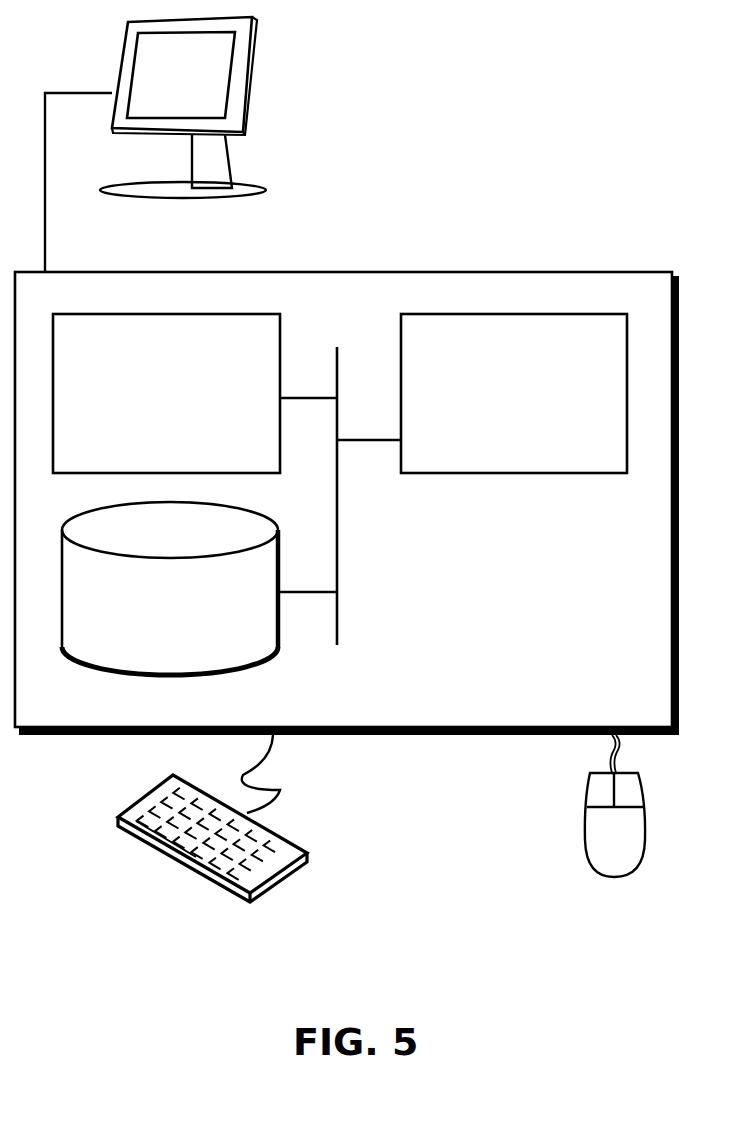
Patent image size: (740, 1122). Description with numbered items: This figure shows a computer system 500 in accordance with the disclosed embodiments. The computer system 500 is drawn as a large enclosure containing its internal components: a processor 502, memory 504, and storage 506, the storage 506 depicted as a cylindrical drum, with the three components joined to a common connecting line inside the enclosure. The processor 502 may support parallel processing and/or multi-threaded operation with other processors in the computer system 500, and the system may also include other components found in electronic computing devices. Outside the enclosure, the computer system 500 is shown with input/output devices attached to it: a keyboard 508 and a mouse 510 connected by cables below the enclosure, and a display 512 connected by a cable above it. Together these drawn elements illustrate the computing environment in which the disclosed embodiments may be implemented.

The computer system 500 is at (390, 250).
The processor 502 is at (514, 393).
The memory 504 is at (166, 393).
The storage 506 is at (170, 588).
The keyboard 508 is at (135, 838).
The mouse 510 is at (615, 806).
The display 512 is at (155, 144).